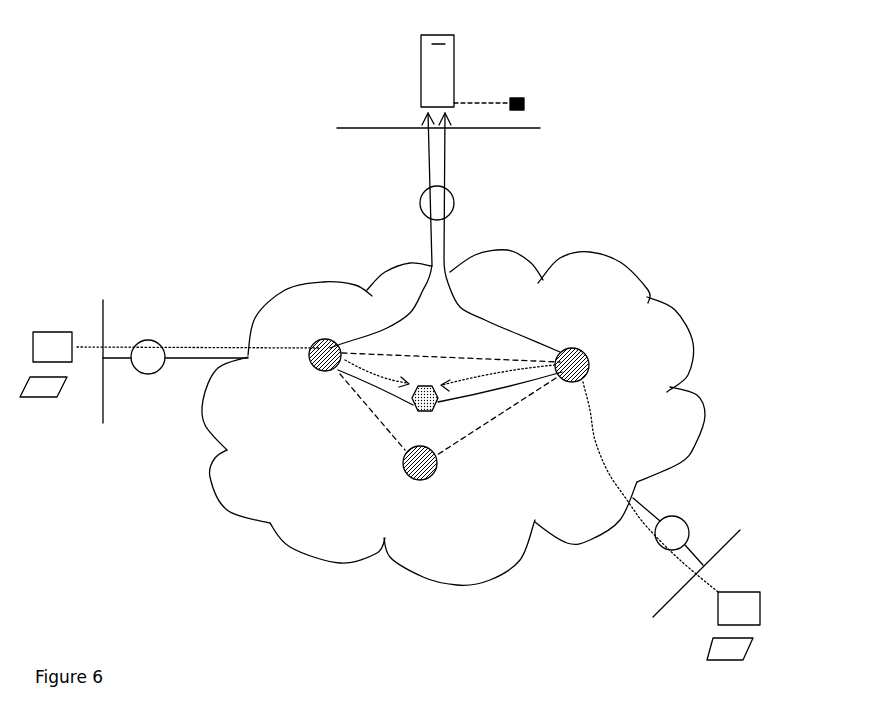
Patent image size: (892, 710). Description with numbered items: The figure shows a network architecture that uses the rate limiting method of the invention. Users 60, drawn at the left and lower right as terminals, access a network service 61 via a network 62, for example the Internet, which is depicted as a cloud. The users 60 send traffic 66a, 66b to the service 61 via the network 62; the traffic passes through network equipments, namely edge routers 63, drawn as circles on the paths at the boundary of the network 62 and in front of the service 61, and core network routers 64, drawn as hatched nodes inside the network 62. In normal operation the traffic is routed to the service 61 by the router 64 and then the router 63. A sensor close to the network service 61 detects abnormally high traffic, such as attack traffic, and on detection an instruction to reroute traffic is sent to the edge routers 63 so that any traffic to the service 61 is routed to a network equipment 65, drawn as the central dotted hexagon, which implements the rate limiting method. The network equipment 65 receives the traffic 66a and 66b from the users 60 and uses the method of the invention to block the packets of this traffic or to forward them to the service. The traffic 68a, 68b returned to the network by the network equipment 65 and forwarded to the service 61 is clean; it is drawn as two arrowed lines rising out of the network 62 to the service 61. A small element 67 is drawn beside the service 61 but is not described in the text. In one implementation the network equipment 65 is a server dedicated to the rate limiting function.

The users 60 is at (55, 331).
The network service 61 is at (454, 80).
The network 62 is at (325, 282).
The edge routers 63 is at (420, 205).
The core network routers 64 is at (322, 369).
The network equipment 65 is at (425, 412).
The traffic 66a is at (220, 338).
The traffic 66b is at (685, 567).
The database 67 is at (524, 106).
The traffic 68a is at (432, 175).
The traffic 68b is at (440, 165).